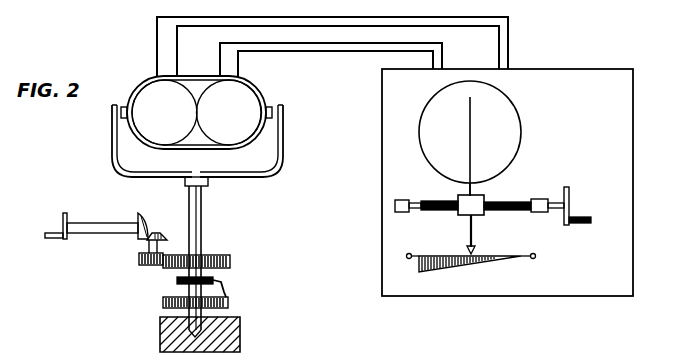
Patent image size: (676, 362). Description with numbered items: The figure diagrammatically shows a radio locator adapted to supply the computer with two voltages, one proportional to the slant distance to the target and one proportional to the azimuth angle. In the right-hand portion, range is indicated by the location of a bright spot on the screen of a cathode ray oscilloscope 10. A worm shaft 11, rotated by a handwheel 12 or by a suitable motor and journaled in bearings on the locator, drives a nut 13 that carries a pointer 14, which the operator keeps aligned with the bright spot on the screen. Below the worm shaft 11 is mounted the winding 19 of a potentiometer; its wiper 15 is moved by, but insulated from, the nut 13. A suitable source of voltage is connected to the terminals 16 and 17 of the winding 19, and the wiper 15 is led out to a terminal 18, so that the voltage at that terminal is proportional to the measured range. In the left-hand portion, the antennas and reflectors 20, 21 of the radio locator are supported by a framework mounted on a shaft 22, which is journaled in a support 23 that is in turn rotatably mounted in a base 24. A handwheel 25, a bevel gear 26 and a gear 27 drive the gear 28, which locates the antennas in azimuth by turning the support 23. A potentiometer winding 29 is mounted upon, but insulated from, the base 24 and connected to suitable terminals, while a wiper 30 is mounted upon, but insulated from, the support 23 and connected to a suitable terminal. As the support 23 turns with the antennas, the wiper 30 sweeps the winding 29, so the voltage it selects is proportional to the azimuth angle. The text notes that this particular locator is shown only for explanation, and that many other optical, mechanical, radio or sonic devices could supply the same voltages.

The cathode ray oscilloscope 10 is at (521, 132).
The worm shaft 11 is at (528, 203).
The handwheel 12 is at (569, 190).
The nut 13 is at (484, 211).
The pointer 14 is at (473, 189).
The wiper 15 is at (472, 240).
The terminal 16 is at (406, 264).
The terminal 17 is at (534, 264).
The terminal 18 is at (469, 232).
The winding 19 is at (466, 264).
The antenna and reflector 20 is at (140, 86).
The antenna and reflector 21 is at (256, 82).
The shaft 22 is at (272, 106).
The support 23 is at (283, 160).
The base 24 is at (240, 335).
The handwheel 25 is at (60, 240).
The bevel gear 26 is at (150, 227).
The gear 27 is at (139, 263).
The gear 28 is at (230, 262).
The potentiometer winding 29 is at (163, 302).
The wiper 30 is at (225, 290).